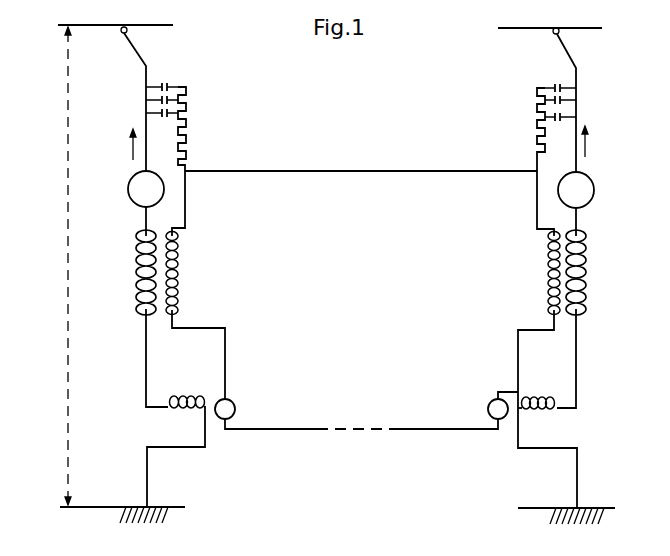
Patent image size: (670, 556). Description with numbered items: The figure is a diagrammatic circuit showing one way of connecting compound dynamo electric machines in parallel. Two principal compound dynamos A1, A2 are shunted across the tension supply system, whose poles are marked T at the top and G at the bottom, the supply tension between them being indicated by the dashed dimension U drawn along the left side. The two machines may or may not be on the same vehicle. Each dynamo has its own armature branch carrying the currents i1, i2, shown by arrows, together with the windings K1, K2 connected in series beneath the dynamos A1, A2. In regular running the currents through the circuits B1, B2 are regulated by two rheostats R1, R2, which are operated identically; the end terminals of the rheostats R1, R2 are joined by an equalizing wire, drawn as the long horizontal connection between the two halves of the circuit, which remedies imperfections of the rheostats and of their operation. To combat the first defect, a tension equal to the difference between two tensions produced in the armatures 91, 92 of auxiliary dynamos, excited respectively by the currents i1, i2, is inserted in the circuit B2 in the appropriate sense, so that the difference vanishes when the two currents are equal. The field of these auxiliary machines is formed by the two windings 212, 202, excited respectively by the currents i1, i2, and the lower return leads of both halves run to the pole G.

The pole T is at (330, 86).
The supply voltage U is at (56, 266).
The current i1 is at (591, 141).
The current i2 is at (125, 144).
The rheostat R1 is at (545, 127).
The rheostat R2 is at (166, 127).
The principal compound dynamo A1 is at (567, 201).
The principal compound dynamo A2 is at (133, 200).
The coil K1 is at (584, 319).
The coil K2 is at (137, 318).
The electric circuit B1 is at (544, 339).
The electric circuit B2 is at (178, 275).
The armature 91 is at (459, 407).
The armature 92 is at (233, 402).
The winding 202 is at (187, 416).
The winding 212 is at (546, 416).
The pole G is at (345, 518).